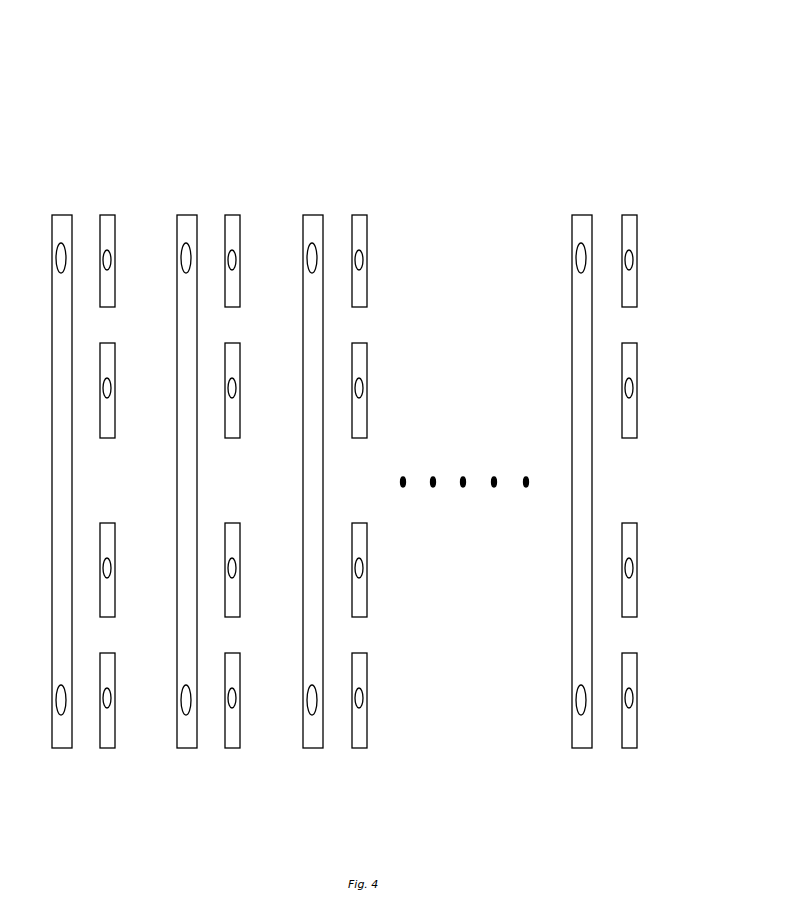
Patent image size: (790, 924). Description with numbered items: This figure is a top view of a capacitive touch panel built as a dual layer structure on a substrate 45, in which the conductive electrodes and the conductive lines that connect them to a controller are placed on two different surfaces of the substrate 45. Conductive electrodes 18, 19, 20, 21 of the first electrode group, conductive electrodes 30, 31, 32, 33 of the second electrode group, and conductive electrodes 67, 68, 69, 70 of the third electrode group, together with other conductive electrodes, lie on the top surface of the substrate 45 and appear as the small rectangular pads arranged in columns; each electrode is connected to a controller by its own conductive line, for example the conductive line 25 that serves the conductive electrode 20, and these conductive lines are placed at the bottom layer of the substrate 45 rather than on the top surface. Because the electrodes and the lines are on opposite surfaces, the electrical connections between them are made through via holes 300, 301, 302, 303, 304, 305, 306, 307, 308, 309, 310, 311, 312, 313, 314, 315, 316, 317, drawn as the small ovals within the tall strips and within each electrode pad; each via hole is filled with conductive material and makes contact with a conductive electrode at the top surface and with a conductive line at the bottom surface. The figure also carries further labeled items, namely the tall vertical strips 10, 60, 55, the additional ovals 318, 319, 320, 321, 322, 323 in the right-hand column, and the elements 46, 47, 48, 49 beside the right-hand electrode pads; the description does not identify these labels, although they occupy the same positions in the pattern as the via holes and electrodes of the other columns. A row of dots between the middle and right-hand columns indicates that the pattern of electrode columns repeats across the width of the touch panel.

The substrate 45 is at (370, 113).
The first bit line 10 is at (54, 440).
The conductive line 25 is at (185, 450).
The third bit line 60 is at (315, 448).
The last bit line 55 is at (584, 399).
The via hole 300 is at (61, 248).
The via hole 306 is at (186, 248).
The via hole 312 is at (312, 248).
The contact region 318 is at (582, 247).
The via hole 301 is at (61, 702).
The via hole 307 is at (186, 702).
The via hole 313 is at (312, 702).
The contact region 319 is at (583, 703).
The via hole 302 is at (107, 250).
The via hole 303 is at (107, 378).
The via hole 304 is at (107, 558).
The via hole 305 is at (107, 688).
The conductive electrode 18 is at (110, 280).
The conductive electrode 19 is at (110, 416).
The conductive electrode 20 is at (110, 595).
The conductive electrode 21 is at (110, 726).
The via hole 308 is at (232, 250).
The via hole 309 is at (232, 378).
The via hole 310 is at (232, 558).
The via hole 311 is at (232, 688).
The conductive electrode 30 is at (235, 280).
The conductive electrode 31 is at (235, 416).
The conductive electrode 32 is at (235, 595).
The conductive electrode 33 is at (235, 726).
The via hole 314 is at (359, 250).
The via hole 315 is at (359, 378).
The via hole 316 is at (359, 558).
The via hole 317 is at (359, 688).
The conductive electrode 67 is at (362, 280).
The conductive electrode 68 is at (362, 416).
The conductive electrode 69 is at (362, 595).
The conductive electrode 70 is at (362, 726).
The memory cell 320 is at (629, 252).
The memory cell 321 is at (629, 380).
The memory cell 322 is at (629, 560).
The memory cell 323 is at (629, 690).
The cell terminal 46 is at (632, 280).
The cell terminal 47 is at (632, 416).
The cell terminal 48 is at (632, 595).
The cell terminal 49 is at (632, 726).